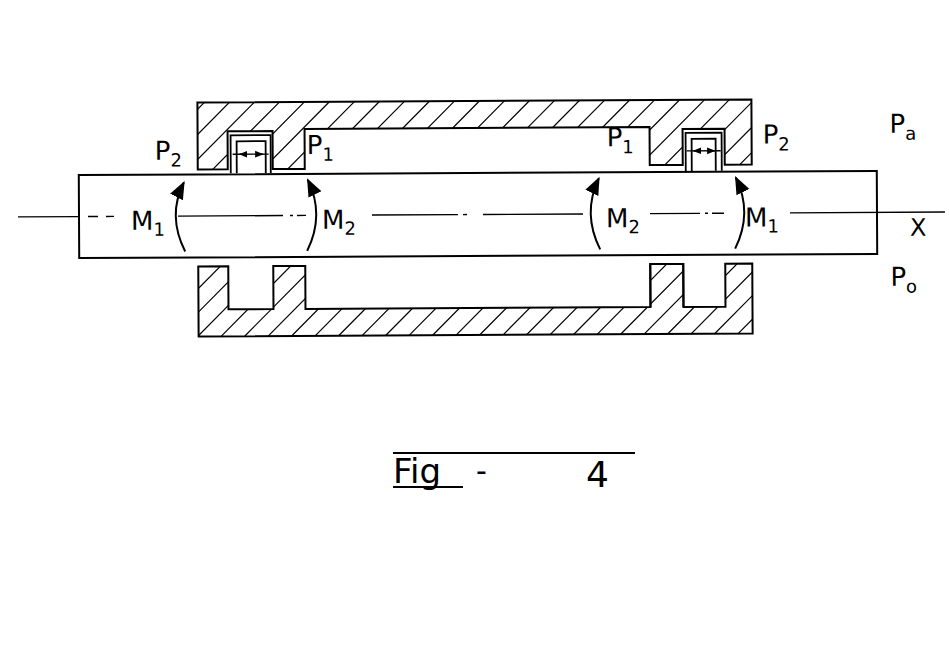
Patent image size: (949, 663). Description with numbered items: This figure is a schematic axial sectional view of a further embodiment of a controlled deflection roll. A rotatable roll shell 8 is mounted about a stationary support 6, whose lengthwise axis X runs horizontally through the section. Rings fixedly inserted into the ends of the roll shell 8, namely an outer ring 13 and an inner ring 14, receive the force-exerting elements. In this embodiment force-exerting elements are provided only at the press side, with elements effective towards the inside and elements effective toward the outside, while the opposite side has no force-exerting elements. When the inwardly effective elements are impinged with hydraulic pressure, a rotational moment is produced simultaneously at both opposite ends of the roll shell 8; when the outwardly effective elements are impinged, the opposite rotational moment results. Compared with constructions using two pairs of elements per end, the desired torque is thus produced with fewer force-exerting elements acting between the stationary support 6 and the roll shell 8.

The roll shell 8 is at (592, 110).
The stationary support 6 is at (462, 203).
The outer ring 13 is at (737, 280).
The inner ring 14 is at (660, 285).